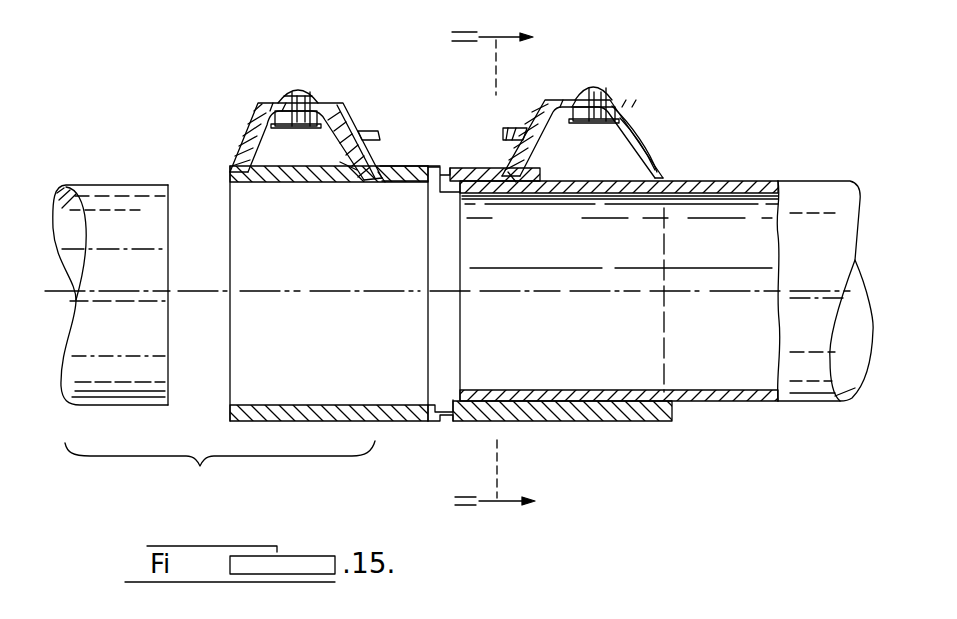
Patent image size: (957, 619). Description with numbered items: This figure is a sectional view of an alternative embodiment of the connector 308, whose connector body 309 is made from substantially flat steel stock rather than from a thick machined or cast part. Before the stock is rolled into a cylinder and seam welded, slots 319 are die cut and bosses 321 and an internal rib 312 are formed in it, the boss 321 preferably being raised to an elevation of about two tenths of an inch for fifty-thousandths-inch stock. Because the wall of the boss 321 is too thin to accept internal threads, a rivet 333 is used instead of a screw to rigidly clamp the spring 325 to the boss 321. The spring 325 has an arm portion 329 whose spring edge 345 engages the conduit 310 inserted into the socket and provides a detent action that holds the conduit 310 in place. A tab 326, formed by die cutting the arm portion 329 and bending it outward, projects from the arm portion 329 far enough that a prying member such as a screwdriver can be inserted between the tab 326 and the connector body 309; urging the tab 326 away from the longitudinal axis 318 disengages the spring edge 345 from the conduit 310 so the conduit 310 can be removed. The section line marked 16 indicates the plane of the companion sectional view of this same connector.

The section line 16- 16 is at (513, 262).
The connector 308 is at (676, 420).
The connector body 309 is at (390, 422).
The conduit 310 is at (809, 181).
The internal rib 312 is at (433, 394).
The longitudinal axis 318 is at (281, 292).
The slots 319 is at (392, 167).
The boss 321 is at (243, 141).
The spring 325 is at (349, 96).
The tab 326 is at (380, 130).
The arm portion 329 is at (340, 162).
The rivet 333 is at (292, 104).
The spring edge 345 is at (383, 180).